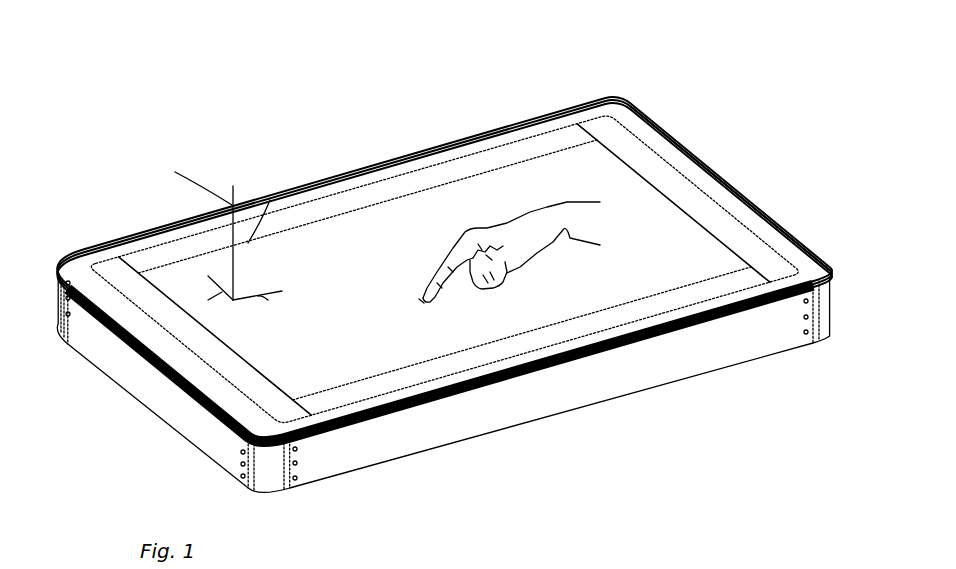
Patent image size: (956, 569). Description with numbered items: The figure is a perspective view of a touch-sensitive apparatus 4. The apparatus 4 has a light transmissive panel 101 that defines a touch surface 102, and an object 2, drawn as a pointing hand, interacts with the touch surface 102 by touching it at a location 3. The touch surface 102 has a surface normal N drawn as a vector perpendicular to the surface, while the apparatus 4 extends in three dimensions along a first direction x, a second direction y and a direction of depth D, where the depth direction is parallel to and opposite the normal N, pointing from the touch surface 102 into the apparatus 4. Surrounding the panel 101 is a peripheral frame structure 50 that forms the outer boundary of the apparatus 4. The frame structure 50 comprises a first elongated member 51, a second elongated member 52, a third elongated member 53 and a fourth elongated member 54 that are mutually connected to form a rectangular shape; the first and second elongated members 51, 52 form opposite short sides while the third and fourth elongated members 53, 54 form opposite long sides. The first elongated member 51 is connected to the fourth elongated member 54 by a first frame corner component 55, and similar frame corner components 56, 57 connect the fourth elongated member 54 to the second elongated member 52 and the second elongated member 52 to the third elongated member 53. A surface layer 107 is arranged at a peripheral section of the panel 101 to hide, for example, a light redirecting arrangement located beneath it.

The touch-sensitive apparatus 4 is at (448, 280).
The peripheral frame structure 50 is at (448, 295).
The first elongated member 51 is at (700, 165).
The second elongated member 52 is at (153, 386).
The third elongated member 53 is at (132, 237).
The fourth elongated member 54 is at (540, 398).
The first frame corner component 55 is at (825, 320).
The frame corner component 56 is at (268, 474).
The frame corner component 57 is at (56, 305).
The surface layer 107 is at (607, 130).
The light transmissive panel 101 is at (345, 253).
The touch surface 102 is at (376, 338).
The object 2 is at (505, 228).
The location 3 is at (414, 297).